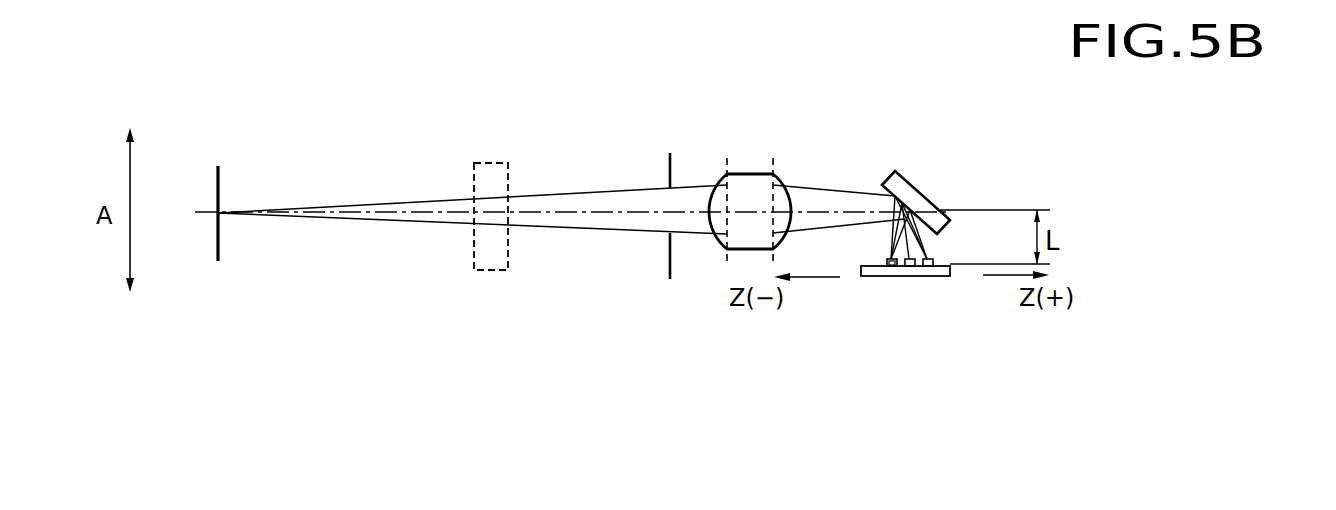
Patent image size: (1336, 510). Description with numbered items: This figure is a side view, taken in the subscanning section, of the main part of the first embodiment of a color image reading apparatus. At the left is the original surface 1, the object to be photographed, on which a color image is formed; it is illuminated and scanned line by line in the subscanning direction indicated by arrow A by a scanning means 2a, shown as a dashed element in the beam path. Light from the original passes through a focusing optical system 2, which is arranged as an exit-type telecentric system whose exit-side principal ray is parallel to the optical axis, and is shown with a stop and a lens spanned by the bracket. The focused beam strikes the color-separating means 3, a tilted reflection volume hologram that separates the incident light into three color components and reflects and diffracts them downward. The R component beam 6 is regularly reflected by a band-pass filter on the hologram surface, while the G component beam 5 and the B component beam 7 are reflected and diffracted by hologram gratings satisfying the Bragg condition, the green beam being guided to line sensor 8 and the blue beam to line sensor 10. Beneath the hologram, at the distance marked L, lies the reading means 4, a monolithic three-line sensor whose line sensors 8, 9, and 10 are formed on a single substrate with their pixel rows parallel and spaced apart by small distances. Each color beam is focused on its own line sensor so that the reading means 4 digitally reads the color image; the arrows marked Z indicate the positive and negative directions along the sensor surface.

The original surface 1 is at (220, 178).
The focusing optical system 2 is at (803, 141).
The scanning means 2a is at (490, 180).
The color-separating means 3 is at (897, 170).
The reading means 4 is at (947, 277).
The G component beam 5 is at (893, 237).
The R component beam 6 is at (900, 277).
The B component beam 7 is at (925, 238).
The line sensor 8 is at (889, 277).
The line sensor 9 is at (910, 277).
The line sensor 10 is at (927, 277).